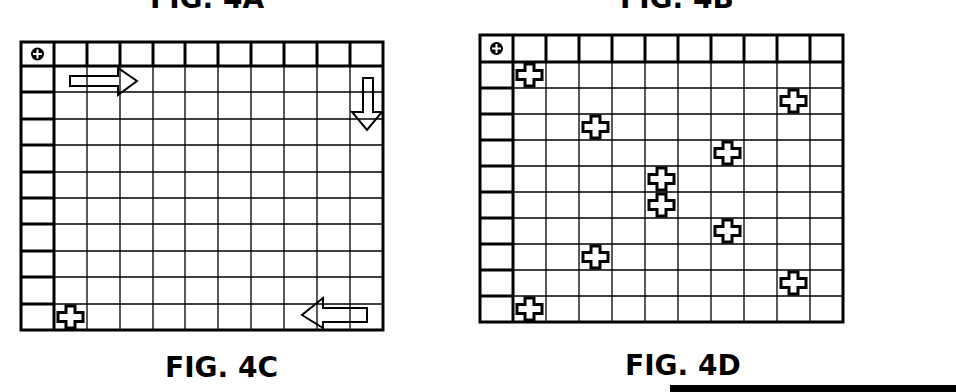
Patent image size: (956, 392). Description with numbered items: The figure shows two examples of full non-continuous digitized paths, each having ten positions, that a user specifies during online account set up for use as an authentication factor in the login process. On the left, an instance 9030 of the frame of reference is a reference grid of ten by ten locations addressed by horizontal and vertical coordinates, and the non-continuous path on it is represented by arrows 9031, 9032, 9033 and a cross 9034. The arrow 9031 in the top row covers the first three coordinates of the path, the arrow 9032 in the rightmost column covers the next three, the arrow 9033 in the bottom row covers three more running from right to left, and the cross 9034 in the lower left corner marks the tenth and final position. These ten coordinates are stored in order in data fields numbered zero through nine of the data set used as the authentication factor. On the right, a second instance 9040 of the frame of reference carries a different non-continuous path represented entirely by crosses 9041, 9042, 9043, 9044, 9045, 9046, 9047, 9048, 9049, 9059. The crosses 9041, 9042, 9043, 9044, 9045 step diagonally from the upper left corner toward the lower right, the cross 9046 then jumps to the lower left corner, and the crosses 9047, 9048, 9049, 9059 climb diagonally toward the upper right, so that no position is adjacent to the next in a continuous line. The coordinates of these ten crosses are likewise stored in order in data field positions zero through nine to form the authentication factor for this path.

In FIG. 4C, the instance of the frame of reference 9030 is at (387, 170).
In FIG. 4C, the arrow 9031 is at (108, 70).
In FIG. 4C, the arrow 9032 is at (357, 97).
In FIG. 4C, the arrow 9033 is at (360, 317).
In FIG. 4C, the cross 9034 is at (90, 316).
In FIG. 4D, the instance of the frame of reference 9040 is at (479, 187).
In FIG. 4D, the cross 9041 is at (550, 72).
In FIG. 4D, the cross 9042 is at (578, 127).
In FIG. 4D, the cross 9043 is at (660, 165).
In FIG. 4D, the cross 9044 is at (747, 229).
In FIG. 4D, the cross 9045 is at (777, 281).
In FIG. 4D, the cross 9046 is at (532, 322).
In FIG. 4D, the cross 9047 is at (578, 257).
In FIG. 4D, the cross 9048 is at (662, 218).
In FIG. 4D, the cross 9049 is at (728, 138).
In FIG. 4D, the cross 9059 is at (817, 100).